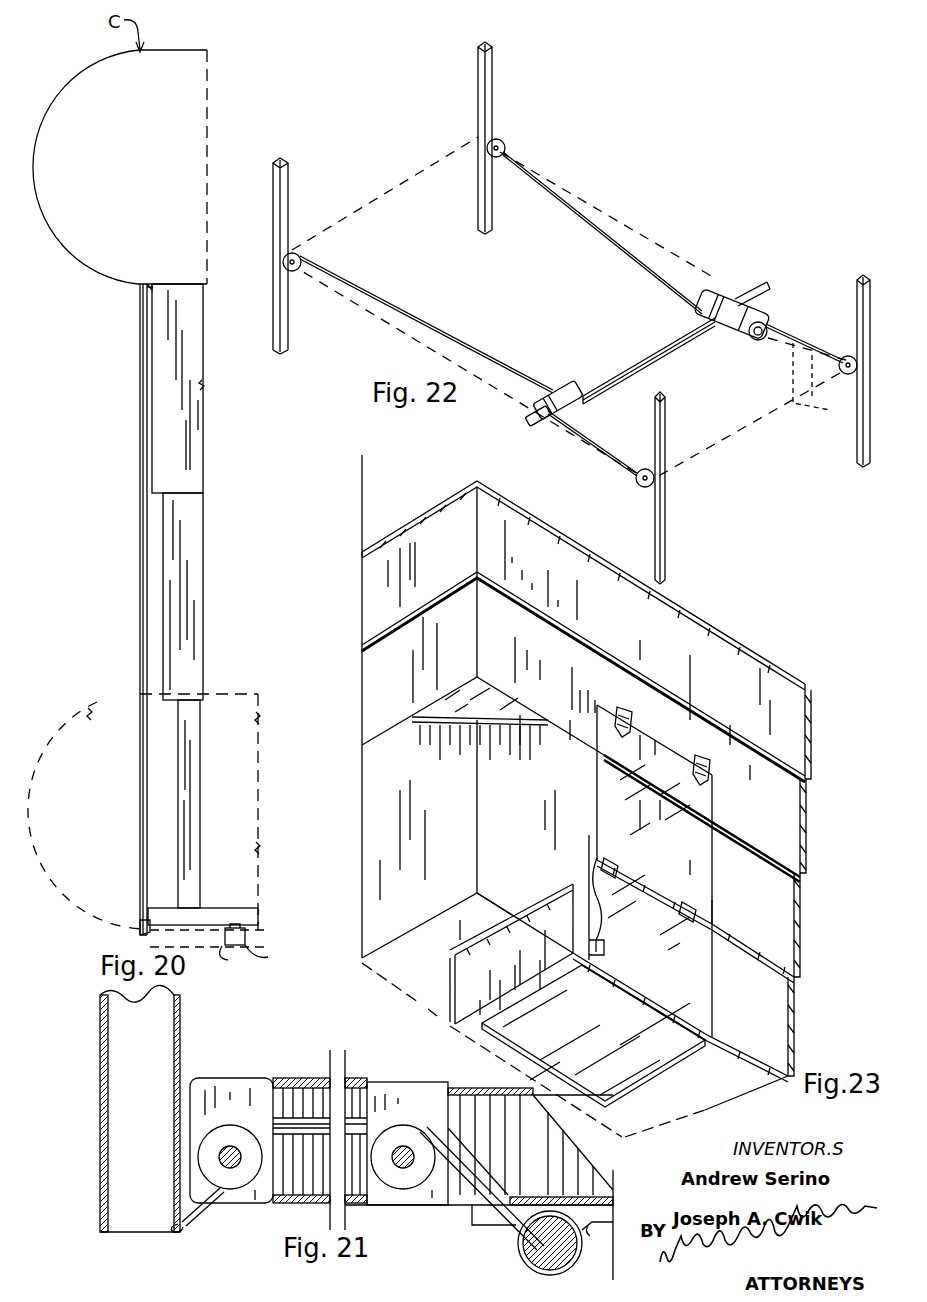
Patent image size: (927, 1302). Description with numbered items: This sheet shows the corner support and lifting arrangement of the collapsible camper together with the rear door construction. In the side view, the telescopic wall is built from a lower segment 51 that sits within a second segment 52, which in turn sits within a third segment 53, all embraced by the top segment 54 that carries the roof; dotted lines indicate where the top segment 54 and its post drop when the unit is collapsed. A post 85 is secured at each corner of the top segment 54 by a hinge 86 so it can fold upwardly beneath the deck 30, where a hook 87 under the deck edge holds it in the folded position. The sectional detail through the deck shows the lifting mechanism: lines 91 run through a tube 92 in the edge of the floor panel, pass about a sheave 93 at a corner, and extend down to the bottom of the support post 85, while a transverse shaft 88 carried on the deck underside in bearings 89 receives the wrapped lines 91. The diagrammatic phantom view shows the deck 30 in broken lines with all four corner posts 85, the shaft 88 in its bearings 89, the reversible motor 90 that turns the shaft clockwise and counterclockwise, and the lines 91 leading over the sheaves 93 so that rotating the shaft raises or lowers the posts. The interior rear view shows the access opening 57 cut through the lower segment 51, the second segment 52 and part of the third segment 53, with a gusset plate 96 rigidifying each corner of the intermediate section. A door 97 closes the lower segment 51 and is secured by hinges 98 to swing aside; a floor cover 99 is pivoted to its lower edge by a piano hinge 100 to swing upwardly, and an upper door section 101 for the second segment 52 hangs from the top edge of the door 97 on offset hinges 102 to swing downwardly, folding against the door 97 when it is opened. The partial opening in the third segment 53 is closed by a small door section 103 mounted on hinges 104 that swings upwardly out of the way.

In FIG. 22, the deck 30 is at (660, 246).
In FIG. 23, the lower segment 51 is at (421, 896).
In FIG. 20, the second segment 52 is at (190, 590).
In FIG. 23, the second segment 52 is at (549, 782).
In FIG. 20, the third segment 53 is at (188, 408).
In FIG. 23, the third segment 53 is at (447, 651).
In FIG. 20, the top segment 54 is at (138, 172).
In FIG. 23, the top segment 54 is at (583, 600).
In FIG. 20, the access opening 57 is at (187, 815).
In FIG. 20, the post 85 is at (140, 494).
In FIG. 21, the post 85 is at (118, 1042).
In FIG. 22, the post 85 is at (290, 173).
In FIG. 20, the hinge 86 is at (152, 287).
In FIG. 20, the hook 87 is at (245, 945).
In FIG. 21, the transverse shaft 88 is at (540, 1252).
In FIG. 22, the transverse shaft 88 is at (660, 346).
In FIG. 21, the bearings 89 is at (599, 1237).
In FIG. 22, the bearings 89 is at (700, 303).
In FIG. 22, the reversible motor 90 is at (746, 340).
In FIG. 21, the lines 91 is at (432, 1135).
In FIG. 22, the lines 91 is at (458, 336).
In FIG. 21, the tube 92 is at (322, 1108).
In FIG. 21, the sheave 93 is at (212, 1147).
In FIG. 22, the sheave 93 is at (287, 267).
In FIG. 23, the gusset plate 96 is at (462, 703).
In FIG. 23, the door 97 is at (640, 943).
In FIG. 23, the hinges 98 is at (597, 860).
In FIG. 23, the floor cover 99 is at (634, 1058).
In FIG. 23, the piano hinge 100 is at (645, 998).
In FIG. 23, the door section 101 is at (700, 864).
In FIG. 23, the offset hinges 102 is at (630, 862).
In FIG. 23, the small door section 103 is at (708, 791).
In FIG. 23, the hinges 104 is at (626, 707).